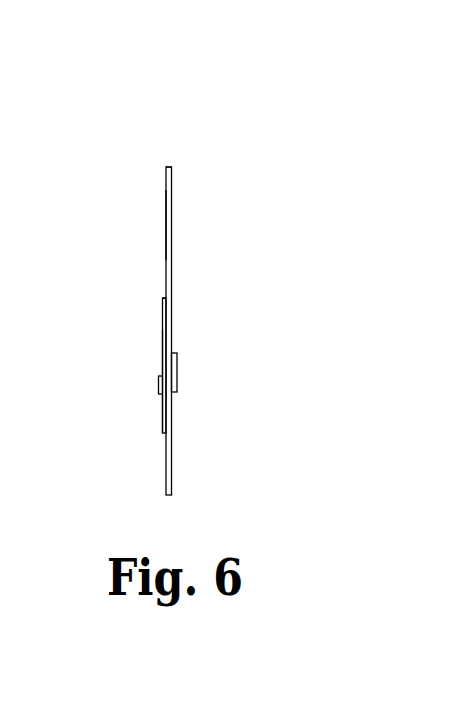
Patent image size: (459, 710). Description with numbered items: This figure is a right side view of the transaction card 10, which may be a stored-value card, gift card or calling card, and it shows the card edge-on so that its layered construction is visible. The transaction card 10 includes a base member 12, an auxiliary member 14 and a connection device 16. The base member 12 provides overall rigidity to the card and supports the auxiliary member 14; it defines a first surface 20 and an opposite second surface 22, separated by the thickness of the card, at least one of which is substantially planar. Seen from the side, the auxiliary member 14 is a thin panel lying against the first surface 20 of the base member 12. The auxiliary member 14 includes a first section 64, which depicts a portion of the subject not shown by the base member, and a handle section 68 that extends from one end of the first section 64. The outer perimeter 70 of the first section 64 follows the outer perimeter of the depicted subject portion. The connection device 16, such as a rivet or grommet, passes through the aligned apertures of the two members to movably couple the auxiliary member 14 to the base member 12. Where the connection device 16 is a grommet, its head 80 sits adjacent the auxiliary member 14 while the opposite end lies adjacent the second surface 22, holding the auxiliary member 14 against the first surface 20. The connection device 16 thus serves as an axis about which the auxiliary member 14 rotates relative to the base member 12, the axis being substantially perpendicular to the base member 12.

The transaction card 10 is at (126, 165).
The base member 12 is at (172, 250).
The auxiliary member 14 is at (162, 338).
The connection device 16 is at (162, 394).
The first surface 20 is at (165, 226).
The second surface 22 is at (172, 180).
The first section 64 is at (162, 312).
The handle section 68 is at (177, 385).
The outer perimeter 70 is at (164, 298).
The head 80 is at (158, 378).